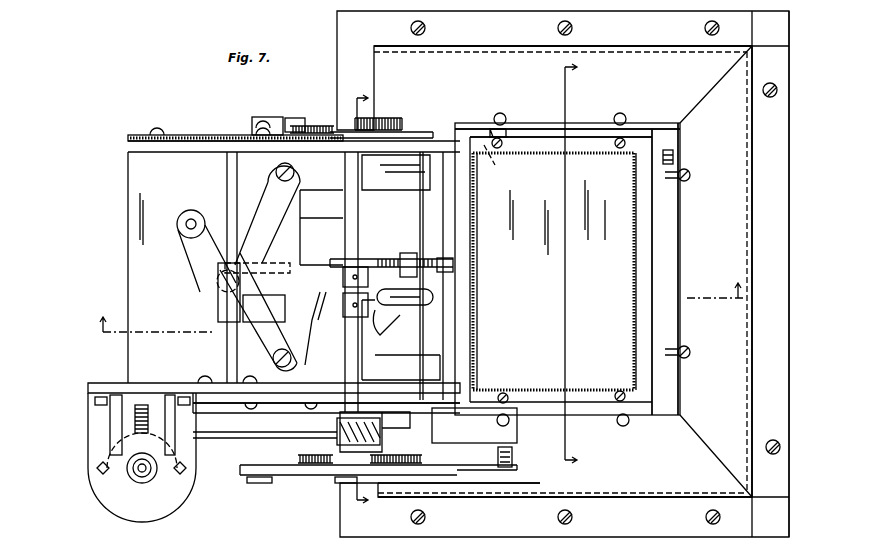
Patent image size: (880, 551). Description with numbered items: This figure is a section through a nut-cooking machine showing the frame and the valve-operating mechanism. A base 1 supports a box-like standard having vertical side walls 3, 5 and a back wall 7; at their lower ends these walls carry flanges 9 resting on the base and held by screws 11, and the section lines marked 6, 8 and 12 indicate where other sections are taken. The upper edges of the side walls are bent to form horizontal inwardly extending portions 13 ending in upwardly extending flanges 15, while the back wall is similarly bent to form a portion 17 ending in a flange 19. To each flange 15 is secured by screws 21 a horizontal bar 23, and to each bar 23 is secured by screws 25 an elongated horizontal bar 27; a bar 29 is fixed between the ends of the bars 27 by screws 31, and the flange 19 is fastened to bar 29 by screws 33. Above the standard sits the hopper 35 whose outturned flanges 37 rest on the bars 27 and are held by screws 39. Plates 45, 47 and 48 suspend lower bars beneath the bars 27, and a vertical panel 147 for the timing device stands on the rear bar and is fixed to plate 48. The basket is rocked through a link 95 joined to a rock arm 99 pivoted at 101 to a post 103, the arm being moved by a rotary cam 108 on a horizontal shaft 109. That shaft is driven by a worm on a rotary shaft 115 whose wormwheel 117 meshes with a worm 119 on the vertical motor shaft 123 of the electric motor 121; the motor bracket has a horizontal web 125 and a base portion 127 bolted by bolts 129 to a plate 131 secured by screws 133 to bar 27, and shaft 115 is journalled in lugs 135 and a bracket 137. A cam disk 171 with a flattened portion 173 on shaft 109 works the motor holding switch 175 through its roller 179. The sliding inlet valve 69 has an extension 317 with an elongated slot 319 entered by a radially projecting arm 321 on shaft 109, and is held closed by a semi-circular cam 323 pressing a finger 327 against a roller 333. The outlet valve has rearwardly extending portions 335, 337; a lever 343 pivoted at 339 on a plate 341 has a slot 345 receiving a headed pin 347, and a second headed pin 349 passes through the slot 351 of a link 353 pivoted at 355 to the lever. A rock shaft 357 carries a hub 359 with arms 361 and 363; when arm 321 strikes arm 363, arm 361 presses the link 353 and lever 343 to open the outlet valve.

The base 1 is at (337, 31).
The side wall 3 is at (659, 495).
The side wall 5 is at (652, 46).
The section line 6 is at (579, 266).
The back wall 7 is at (752, 231).
The section line 8 is at (362, 301).
The flanges 9 is at (775, 128).
The screws 11 is at (426, 29).
The section line 12 is at (418, 296).
The horizontal inwardly extending portion 13 is at (500, 60).
The upwardly extending flange 15 is at (645, 123).
The horizontal inwardly extending portion 17 is at (742, 336).
The upwardly extending flange 19 is at (683, 245).
The screws 21 is at (500, 113).
The horizontal bar 23 is at (530, 128).
The screws 25 is at (628, 395).
The elongated horizontal bar 27 is at (450, 152).
The horizontal bar 29 is at (680, 208).
The screws 31 is at (673, 157).
The screws 33 is at (690, 175).
The hopper 35 is at (478, 290).
The outturned horizontal flange 37 is at (580, 137).
The screws 39 is at (503, 148).
The plate 45 is at (396, 134).
The plate 47 is at (243, 410).
The plate 48 is at (185, 135).
The sliding inlet valve 69 is at (395, 205).
The link 95 is at (310, 477).
The rock arm 99 is at (298, 459).
The pivotal connection 101 is at (510, 472).
The post 103 is at (498, 456).
The rotary cam 108 is at (330, 440).
The horizontal shaft 109 is at (360, 219).
The rotary shaft 115 is at (250, 439).
The wormwheel 117 is at (143, 405).
The worm 119 is at (134, 478).
The electric motor 121 is at (92, 448).
The vertical motor shaft 123 is at (146, 474).
The horizontal web 125 is at (88, 432).
The vertically extending base portion 127 is at (95, 400).
The bolts 129 is at (98, 406).
The plate 131 is at (104, 383).
The screws 133 is at (203, 378).
The lugs 135 is at (97, 468).
The bracket 137 is at (415, 425).
The vertical panel 147 is at (128, 148).
The cam disk 171 is at (396, 118).
The flattened portion 173 is at (378, 412).
The motor holding switch 175 is at (263, 117).
The roller 179 is at (295, 118).
The extension 317 is at (370, 355).
The elongated slot 319 is at (433, 296).
The radially projecting arm 321 is at (403, 310).
The semi-circular cam 323 is at (378, 259).
The finger 327 is at (414, 253).
The roller 333 is at (445, 258).
The rearwardly extending portion 335 is at (338, 200).
The rearwardly extending portion 337 is at (300, 330).
The pivot 339 is at (191, 216).
The plate 341 is at (128, 184).
The lever 343 is at (188, 246).
The slot 345 is at (312, 320).
The headed pin 347 is at (273, 362).
The headed pin 349 is at (276, 172).
The longitudinally extending slot 351 is at (272, 212).
The link 353 is at (300, 218).
The pivotal connection 355 is at (218, 288).
The rock shaft 357 is at (227, 166).
The hub 359 is at (218, 306).
The arm 361 is at (272, 263).
The arm 363 is at (268, 293).